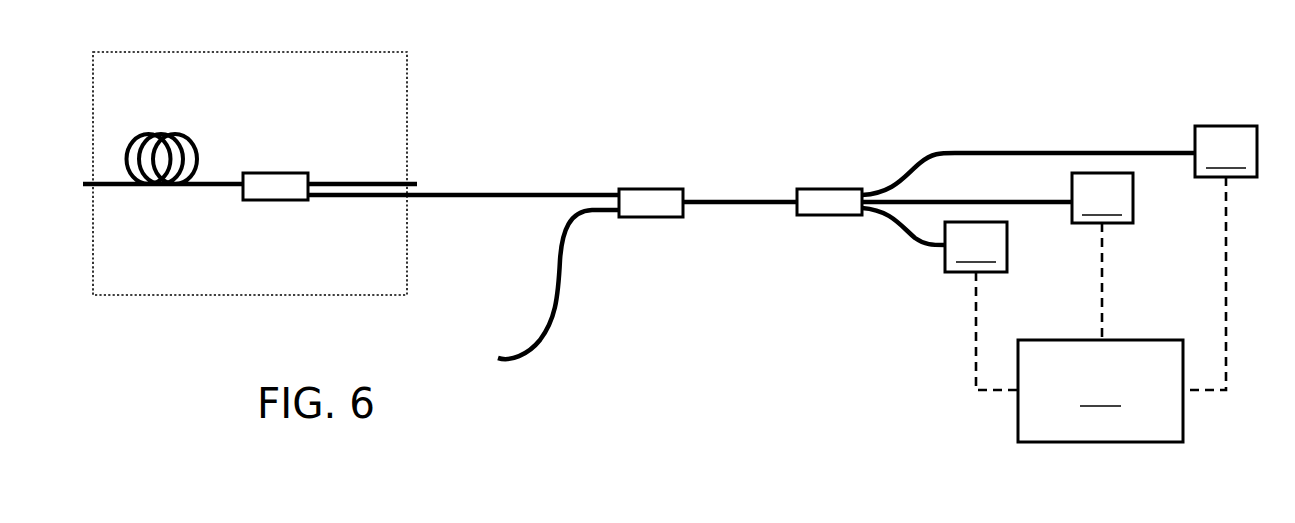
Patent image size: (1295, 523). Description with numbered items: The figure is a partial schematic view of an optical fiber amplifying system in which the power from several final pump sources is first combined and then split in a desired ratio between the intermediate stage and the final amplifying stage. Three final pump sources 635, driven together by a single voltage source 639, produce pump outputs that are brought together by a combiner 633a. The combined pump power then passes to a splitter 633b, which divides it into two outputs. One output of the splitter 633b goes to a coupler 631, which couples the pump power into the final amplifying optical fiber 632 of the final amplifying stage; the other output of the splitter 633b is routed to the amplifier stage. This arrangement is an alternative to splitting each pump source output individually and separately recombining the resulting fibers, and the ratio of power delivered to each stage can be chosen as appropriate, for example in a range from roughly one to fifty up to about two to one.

The coupler 631 is at (275, 200).
The final amplifying optical fiber 632 is at (199, 119).
The combiner 633a is at (650, 217).
The splitter 633b is at (829, 215).
The final pump sources 635 is at (1101, 199).
The voltage source 639 is at (1100, 391).